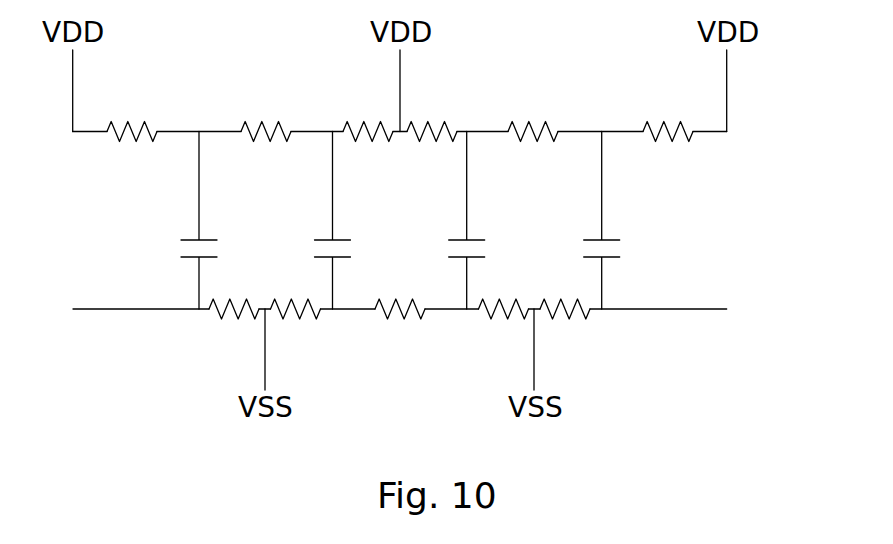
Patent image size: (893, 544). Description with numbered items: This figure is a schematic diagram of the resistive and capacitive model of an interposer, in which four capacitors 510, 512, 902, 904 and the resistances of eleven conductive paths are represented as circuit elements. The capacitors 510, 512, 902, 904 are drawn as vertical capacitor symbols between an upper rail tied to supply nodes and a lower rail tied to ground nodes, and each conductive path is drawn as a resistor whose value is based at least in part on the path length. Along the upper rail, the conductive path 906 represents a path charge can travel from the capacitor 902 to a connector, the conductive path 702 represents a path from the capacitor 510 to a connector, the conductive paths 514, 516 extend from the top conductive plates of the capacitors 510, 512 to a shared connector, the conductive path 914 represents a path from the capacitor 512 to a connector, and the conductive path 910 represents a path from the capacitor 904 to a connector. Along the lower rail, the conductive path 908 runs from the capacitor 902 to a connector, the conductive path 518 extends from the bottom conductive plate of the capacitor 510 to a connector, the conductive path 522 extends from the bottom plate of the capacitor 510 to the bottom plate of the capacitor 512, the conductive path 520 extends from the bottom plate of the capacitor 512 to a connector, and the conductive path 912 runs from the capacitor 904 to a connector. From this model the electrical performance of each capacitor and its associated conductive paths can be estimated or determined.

The conductive path 906 is at (131, 120).
The conductive path 702 is at (265, 120).
The conductive path 514 is at (367, 120).
The conductive path 516 is at (431, 120).
The conductive path 914 is at (532, 120).
The conductive path 910 is at (667, 120).
The capacitor 902 is at (189, 238).
The capacitor 510 is at (322, 238).
The capacitor 512 is at (457, 238).
The capacitor 904 is at (590, 238).
The conductive path 908 is at (233, 320).
The conductive path 518 is at (296, 320).
The conductive path 522 is at (400, 320).
The conductive path 520 is at (503, 320).
The conductive path 912 is at (565, 320).